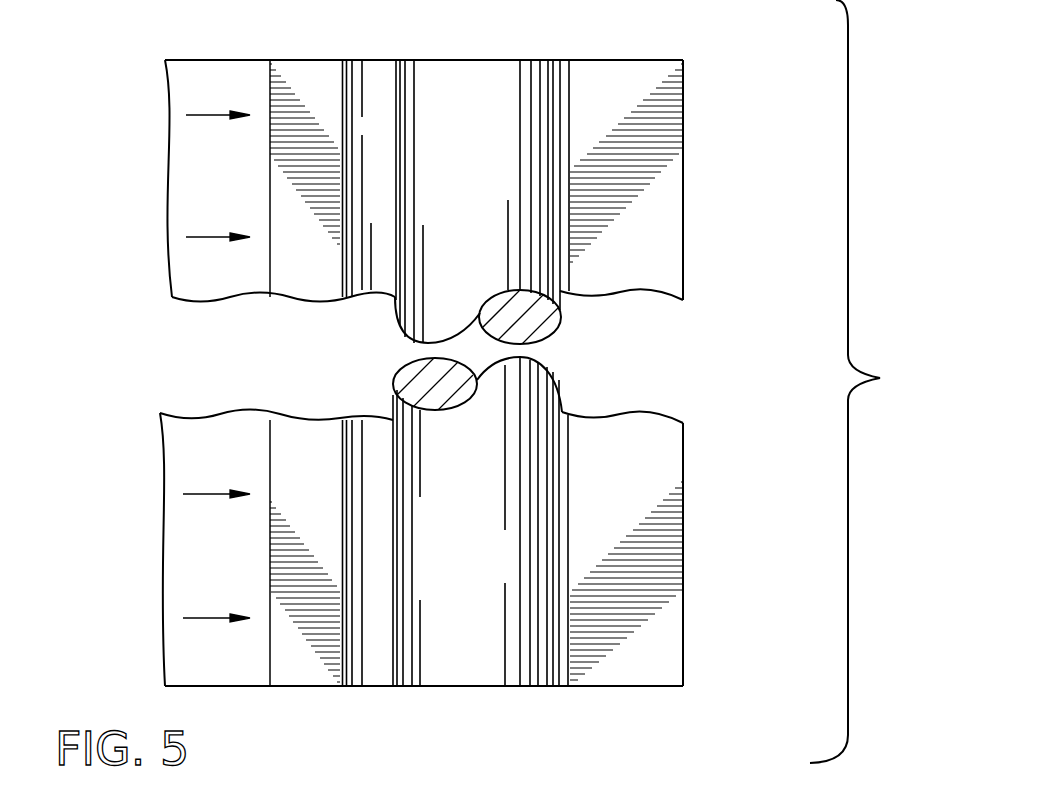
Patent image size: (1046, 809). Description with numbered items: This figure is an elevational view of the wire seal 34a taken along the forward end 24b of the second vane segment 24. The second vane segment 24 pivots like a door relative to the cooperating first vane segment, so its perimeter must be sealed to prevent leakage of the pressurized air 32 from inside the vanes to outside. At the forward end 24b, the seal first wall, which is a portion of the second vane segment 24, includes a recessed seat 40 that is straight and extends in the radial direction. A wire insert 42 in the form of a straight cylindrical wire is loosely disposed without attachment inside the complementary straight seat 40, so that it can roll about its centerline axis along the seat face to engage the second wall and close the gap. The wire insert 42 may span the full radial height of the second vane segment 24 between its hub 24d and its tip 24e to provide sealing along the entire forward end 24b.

The second vane segment 24 is at (156, 553).
The forward end 24b is at (683, 218).
The hub 24d is at (605, 688).
The tip 24e is at (320, 58).
The pressurized air 32 is at (200, 237).
The wire seal 34a is at (697, 43).
The recessed seat 40 is at (368, 686).
The wire insert 42 is at (478, 181).